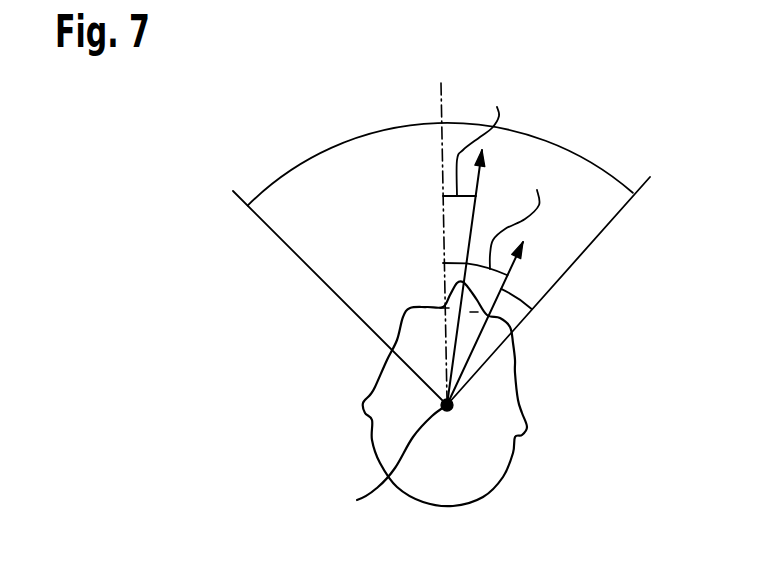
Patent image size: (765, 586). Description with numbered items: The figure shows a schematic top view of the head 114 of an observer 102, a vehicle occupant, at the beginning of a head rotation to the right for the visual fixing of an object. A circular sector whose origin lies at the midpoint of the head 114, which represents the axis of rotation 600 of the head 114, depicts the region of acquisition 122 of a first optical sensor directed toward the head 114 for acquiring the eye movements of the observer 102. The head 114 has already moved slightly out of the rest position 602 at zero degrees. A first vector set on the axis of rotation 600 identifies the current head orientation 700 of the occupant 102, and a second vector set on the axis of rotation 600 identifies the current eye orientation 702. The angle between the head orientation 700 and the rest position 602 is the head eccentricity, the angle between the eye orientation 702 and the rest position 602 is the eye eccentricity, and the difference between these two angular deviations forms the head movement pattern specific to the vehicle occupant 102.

The observer 102 is at (416, 403).
The head 114 is at (497, 440).
The region of acquisition 122 is at (267, 187).
The axis of rotation 600 is at (308, 427).
The rest position 602 is at (439, 101).
The head orientation 700 is at (468, 233).
The eye orientation 702 is at (531, 309).